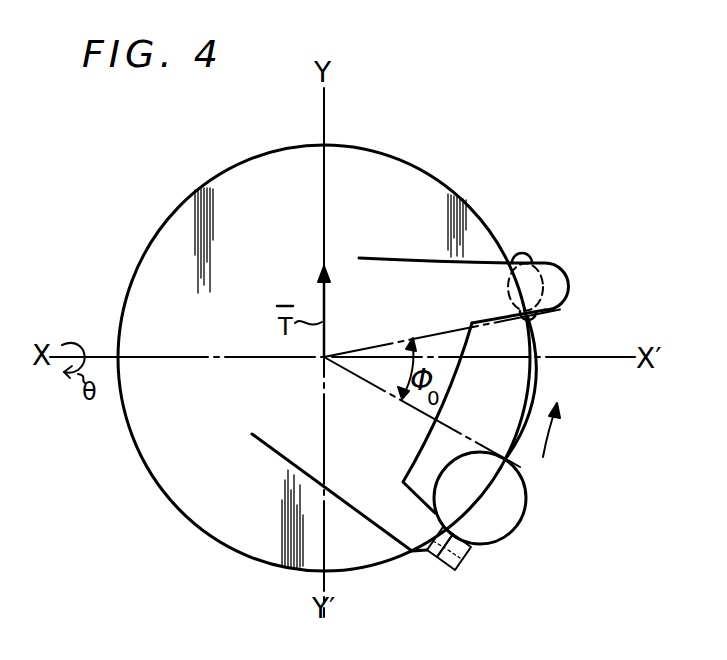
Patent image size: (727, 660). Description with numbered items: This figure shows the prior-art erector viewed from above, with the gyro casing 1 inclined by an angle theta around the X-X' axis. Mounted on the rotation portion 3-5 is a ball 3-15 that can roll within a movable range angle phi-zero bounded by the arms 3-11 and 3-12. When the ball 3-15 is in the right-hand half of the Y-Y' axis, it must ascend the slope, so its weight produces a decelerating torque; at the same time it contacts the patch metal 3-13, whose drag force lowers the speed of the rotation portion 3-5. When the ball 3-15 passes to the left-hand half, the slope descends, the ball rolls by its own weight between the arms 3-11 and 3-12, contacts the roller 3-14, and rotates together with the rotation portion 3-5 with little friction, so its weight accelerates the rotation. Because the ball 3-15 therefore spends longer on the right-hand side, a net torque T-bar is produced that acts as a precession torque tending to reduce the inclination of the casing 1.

The gyro casing 1 is at (176, 512).
The rotation portion 3-5 is at (391, 268).
The arm 3-12 is at (570, 286).
The roller 3-14 is at (522, 256).
The ball 3-15 is at (512, 520).
The patch metal 3-13 is at (433, 560).
The arm 3-11 is at (466, 566).